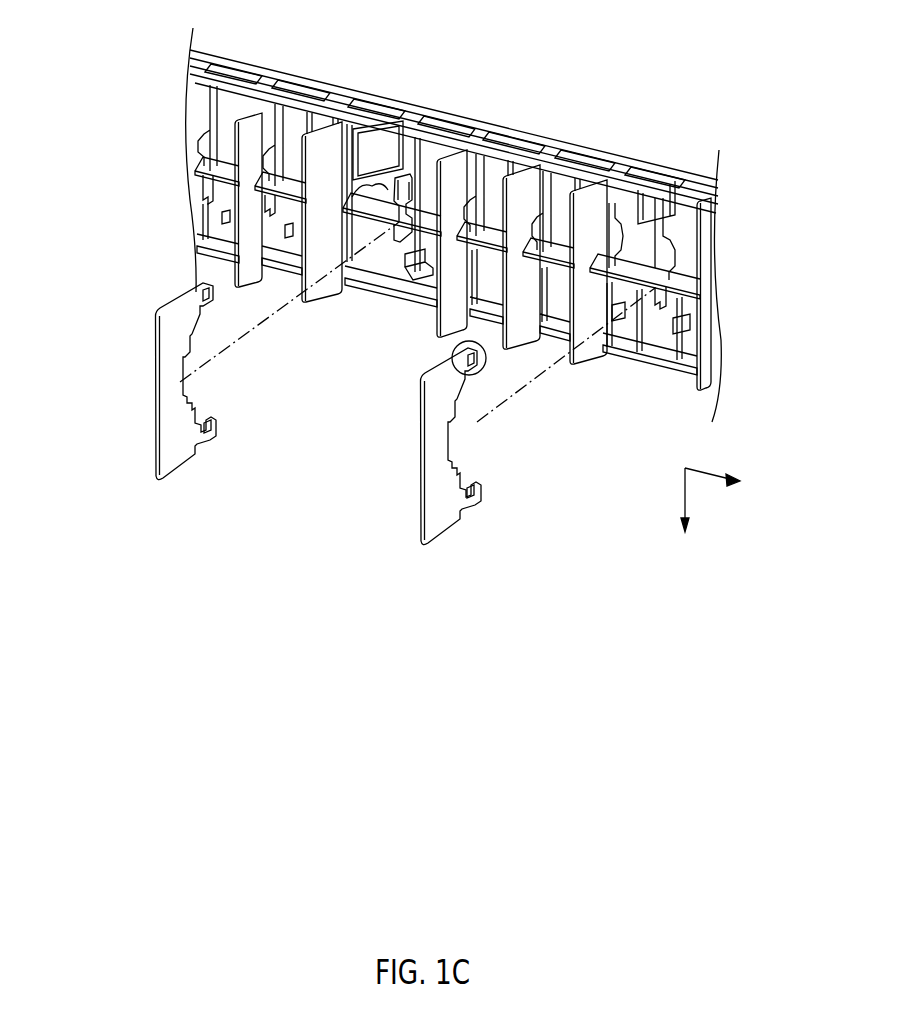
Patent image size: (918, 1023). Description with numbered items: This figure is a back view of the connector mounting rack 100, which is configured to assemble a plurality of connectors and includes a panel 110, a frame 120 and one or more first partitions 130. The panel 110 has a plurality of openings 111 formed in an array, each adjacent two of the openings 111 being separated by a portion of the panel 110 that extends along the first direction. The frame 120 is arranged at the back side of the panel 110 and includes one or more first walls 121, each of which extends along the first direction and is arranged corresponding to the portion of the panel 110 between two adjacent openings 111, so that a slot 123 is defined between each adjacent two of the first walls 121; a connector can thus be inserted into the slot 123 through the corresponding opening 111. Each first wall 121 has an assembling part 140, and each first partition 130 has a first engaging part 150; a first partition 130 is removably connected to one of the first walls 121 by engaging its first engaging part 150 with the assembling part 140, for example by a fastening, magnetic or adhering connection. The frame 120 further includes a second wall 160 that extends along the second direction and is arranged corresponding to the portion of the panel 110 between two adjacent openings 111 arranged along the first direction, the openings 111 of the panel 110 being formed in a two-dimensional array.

The connector mounting rack 100 is at (746, 35).
The panel 110 is at (600, 152).
The opening 111 is at (390, 136).
The frame 120 is at (520, 153).
The first wall 121 is at (412, 134).
The slot 123 is at (379, 149).
The first partition 130 is at (437, 505).
The assembling part 140 is at (428, 290).
The first engaging part 150 is at (453, 363).
The second wall 160 is at (223, 170).